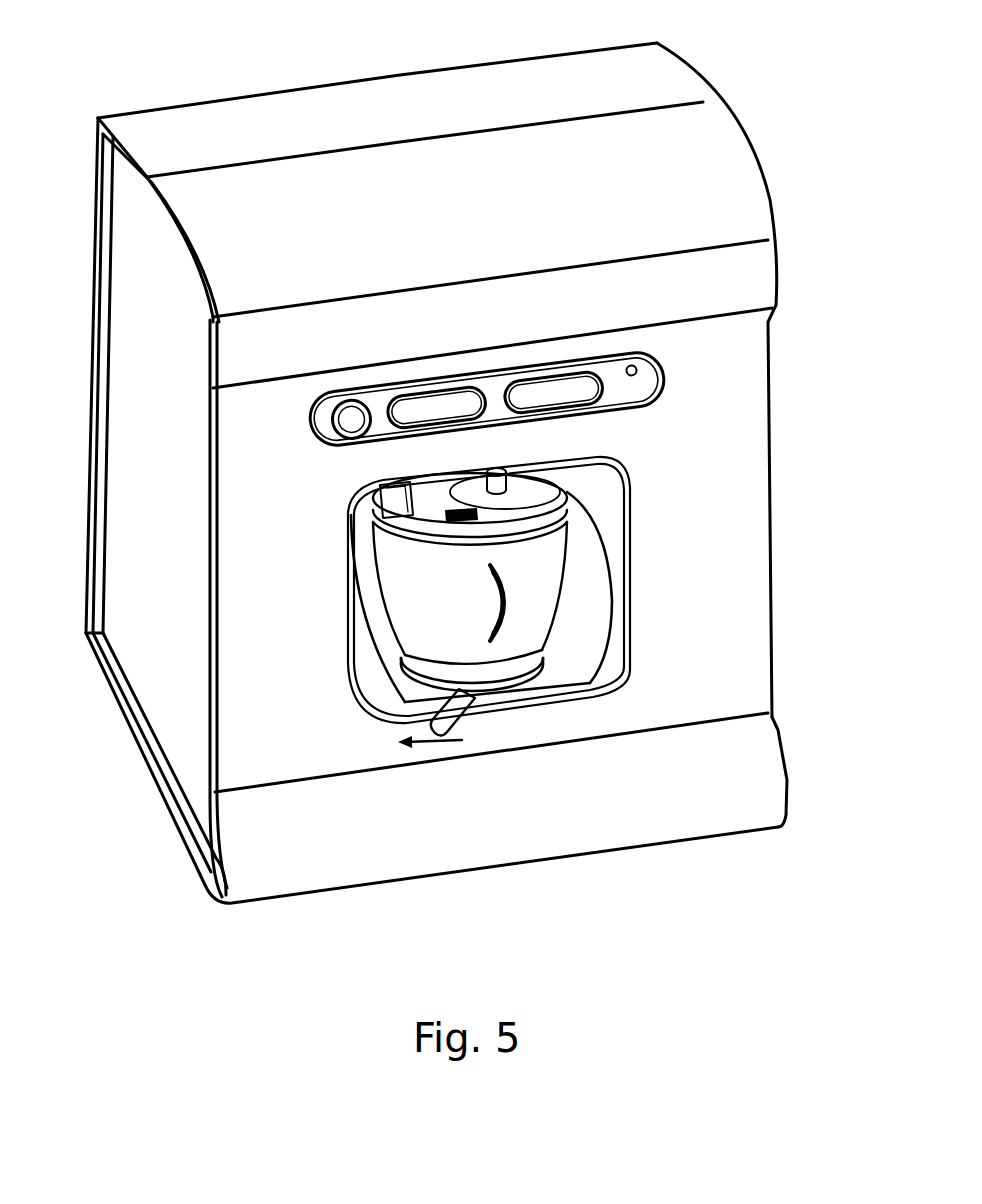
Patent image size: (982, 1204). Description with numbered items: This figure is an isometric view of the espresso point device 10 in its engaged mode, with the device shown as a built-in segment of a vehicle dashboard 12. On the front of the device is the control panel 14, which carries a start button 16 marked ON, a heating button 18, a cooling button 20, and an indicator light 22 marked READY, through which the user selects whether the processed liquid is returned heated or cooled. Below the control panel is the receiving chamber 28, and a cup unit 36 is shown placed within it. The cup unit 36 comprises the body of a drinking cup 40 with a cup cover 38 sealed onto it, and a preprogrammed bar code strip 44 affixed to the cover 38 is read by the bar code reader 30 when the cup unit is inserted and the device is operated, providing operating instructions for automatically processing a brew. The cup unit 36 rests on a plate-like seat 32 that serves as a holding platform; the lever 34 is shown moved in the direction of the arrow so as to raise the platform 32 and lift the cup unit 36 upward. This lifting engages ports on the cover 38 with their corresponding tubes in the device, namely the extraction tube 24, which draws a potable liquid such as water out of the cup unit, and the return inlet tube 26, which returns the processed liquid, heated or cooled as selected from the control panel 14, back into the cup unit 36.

The espresso point device 10 is at (118, 822).
The vehicle dashboard 12 is at (267, 93).
The control panel 14 is at (360, 321).
The start button 16 is at (351, 419).
The heating button 18 is at (436, 407).
The cooling button 20 is at (553, 392).
The indicator light 22 is at (635, 380).
The extraction tube 24 is at (400, 476).
The return inlet tube 26 is at (565, 472).
The receiving chamber 28 is at (632, 567).
The bar code reader 30 is at (480, 463).
The plate-like seat 32 is at (508, 690).
The lever 34 is at (460, 722).
The cup unit 36 is at (568, 616).
The cup cover 38 is at (492, 531).
The drinking cup 40 is at (372, 600).
The bar code strip 44 is at (447, 520).